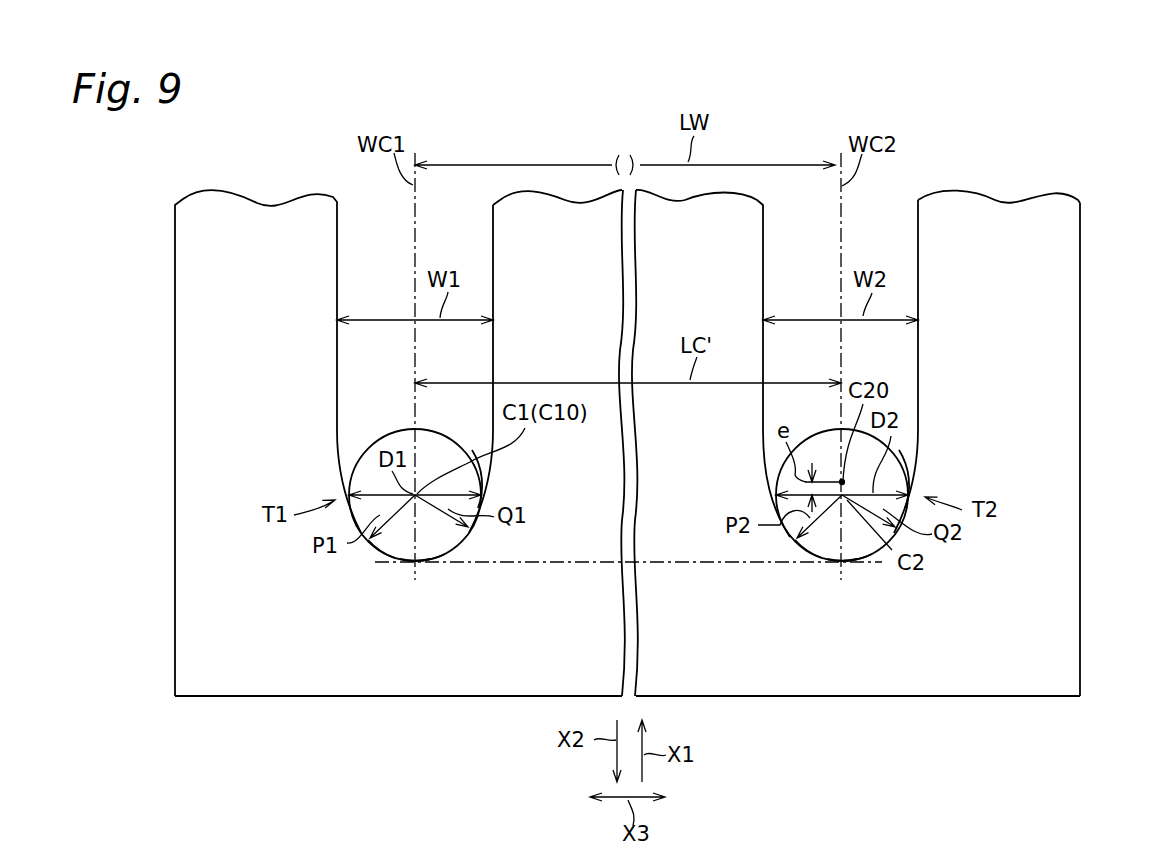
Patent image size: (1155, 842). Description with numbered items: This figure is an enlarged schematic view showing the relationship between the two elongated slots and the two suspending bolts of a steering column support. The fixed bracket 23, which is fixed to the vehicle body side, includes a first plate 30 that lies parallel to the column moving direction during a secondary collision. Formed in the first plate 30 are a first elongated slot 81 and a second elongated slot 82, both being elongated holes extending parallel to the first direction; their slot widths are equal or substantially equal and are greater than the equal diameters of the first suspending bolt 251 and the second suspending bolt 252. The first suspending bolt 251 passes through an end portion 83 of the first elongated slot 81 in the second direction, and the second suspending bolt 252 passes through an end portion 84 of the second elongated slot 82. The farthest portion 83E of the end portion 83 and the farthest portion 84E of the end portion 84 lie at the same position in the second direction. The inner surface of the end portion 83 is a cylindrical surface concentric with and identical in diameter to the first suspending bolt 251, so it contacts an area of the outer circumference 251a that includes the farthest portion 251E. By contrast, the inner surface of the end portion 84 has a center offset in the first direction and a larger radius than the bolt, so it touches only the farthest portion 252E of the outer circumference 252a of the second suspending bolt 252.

The fixed bracket 23 is at (1095, 343).
The first plate 30 is at (1067, 256).
The first elongated slot 81 is at (358, 250).
The second elongated slot 82 is at (897, 248).
The end portion of the first elongated slot 83 is at (392, 556).
The portion of the end portion of the first elongated slot situated farthest in the 83E is at (428, 554).
The end portion of the second elongated slot 84 is at (810, 555).
The portion of the end portion of the second elongated slot situated farthest in the 84E is at (850, 555).
The first suspending bolt 251 is at (348, 448).
The outer circumference of the first suspending bolt 251a is at (480, 477).
The portion of the outer circumference of the first suspending bolt situated farthes 251E is at (413, 565).
The second suspending bolt 252 is at (911, 452).
The outer circumference of the second suspending bolt 252a is at (906, 475).
The portion of the outer circumference of the second suspending bolt situated farthe 252E is at (840, 566).